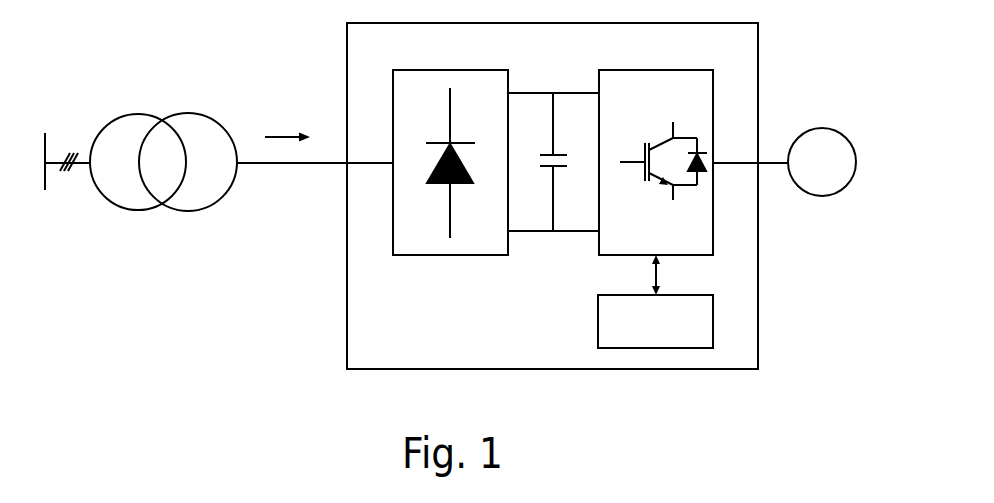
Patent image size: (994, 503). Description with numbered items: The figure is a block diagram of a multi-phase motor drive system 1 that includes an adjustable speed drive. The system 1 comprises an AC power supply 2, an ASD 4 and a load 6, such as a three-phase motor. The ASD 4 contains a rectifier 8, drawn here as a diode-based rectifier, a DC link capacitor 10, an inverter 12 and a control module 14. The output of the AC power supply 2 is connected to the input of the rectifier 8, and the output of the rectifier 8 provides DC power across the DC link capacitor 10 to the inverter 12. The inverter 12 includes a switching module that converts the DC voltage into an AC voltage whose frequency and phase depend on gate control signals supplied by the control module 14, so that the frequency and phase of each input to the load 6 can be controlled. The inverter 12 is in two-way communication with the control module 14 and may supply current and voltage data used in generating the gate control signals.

The system 1 is at (309, 382).
The AC power supply 2 is at (193, 210).
The adjustable speed drive 4 is at (369, 370).
The load 6 is at (820, 128).
The rectifier 8 is at (448, 255).
The DC link capacitor 10 is at (557, 170).
The inverter 12 is at (713, 118).
The control module 14 is at (598, 322).